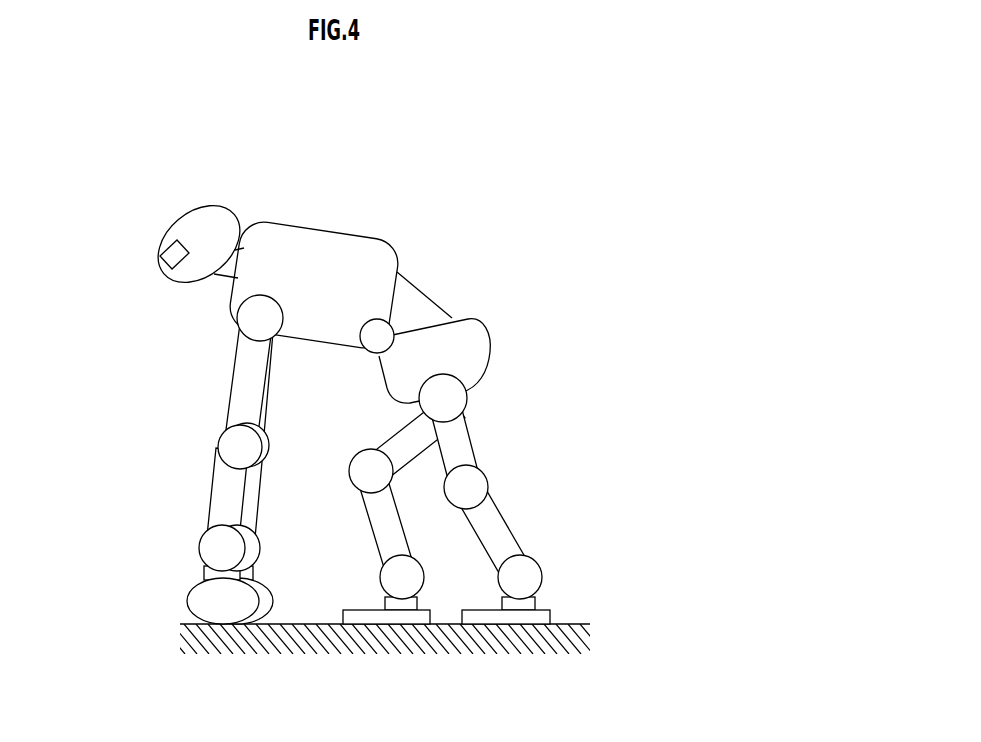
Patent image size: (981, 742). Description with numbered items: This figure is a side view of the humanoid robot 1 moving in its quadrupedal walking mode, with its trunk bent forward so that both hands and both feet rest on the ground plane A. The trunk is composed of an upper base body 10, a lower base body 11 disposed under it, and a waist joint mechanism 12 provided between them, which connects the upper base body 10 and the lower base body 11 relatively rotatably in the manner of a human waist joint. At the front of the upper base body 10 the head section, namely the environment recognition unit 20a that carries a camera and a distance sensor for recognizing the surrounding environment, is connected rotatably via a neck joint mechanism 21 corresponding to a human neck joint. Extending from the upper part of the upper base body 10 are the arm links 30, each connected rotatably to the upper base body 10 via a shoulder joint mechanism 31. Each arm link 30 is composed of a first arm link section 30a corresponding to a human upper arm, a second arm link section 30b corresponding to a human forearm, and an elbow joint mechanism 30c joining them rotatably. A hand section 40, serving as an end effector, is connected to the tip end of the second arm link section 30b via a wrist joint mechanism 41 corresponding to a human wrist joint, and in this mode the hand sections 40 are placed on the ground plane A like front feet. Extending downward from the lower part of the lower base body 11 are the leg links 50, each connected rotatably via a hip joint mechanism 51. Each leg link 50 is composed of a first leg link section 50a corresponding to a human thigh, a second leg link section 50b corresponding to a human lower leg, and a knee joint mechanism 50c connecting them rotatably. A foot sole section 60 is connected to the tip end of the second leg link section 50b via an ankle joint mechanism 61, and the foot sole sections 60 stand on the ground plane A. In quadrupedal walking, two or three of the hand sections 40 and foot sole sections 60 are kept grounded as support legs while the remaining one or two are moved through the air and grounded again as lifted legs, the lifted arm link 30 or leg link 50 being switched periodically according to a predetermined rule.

The robot 1 is at (156, 176).
The upper base body 10 is at (291, 219).
The lower base body 11 is at (477, 318).
The waist joint mechanism 12 is at (424, 292).
The environment recognition unit 20a is at (218, 205).
The neck joint mechanism 21 is at (221, 281).
The arm link 30 is at (226, 433).
The first arm link section 30a is at (242, 421).
The second arm link section 30b is at (230, 477).
The elbow joint mechanism 30c is at (228, 447).
The shoulder joint mechanism 31 is at (234, 335).
The hand section 40 is at (197, 586).
The wrist joint mechanism 41 is at (200, 543).
The leg link 50 is at (442, 468).
The first leg link section 50a is at (396, 442).
The second leg link section 50b is at (370, 508).
The knee joint mechanism 50c is at (368, 476).
The hip joint mechanism 51 is at (458, 399).
The foot sole section 60 is at (363, 607).
The ankle joint mechanism 61 is at (385, 573).
The ground plane A is at (582, 623).